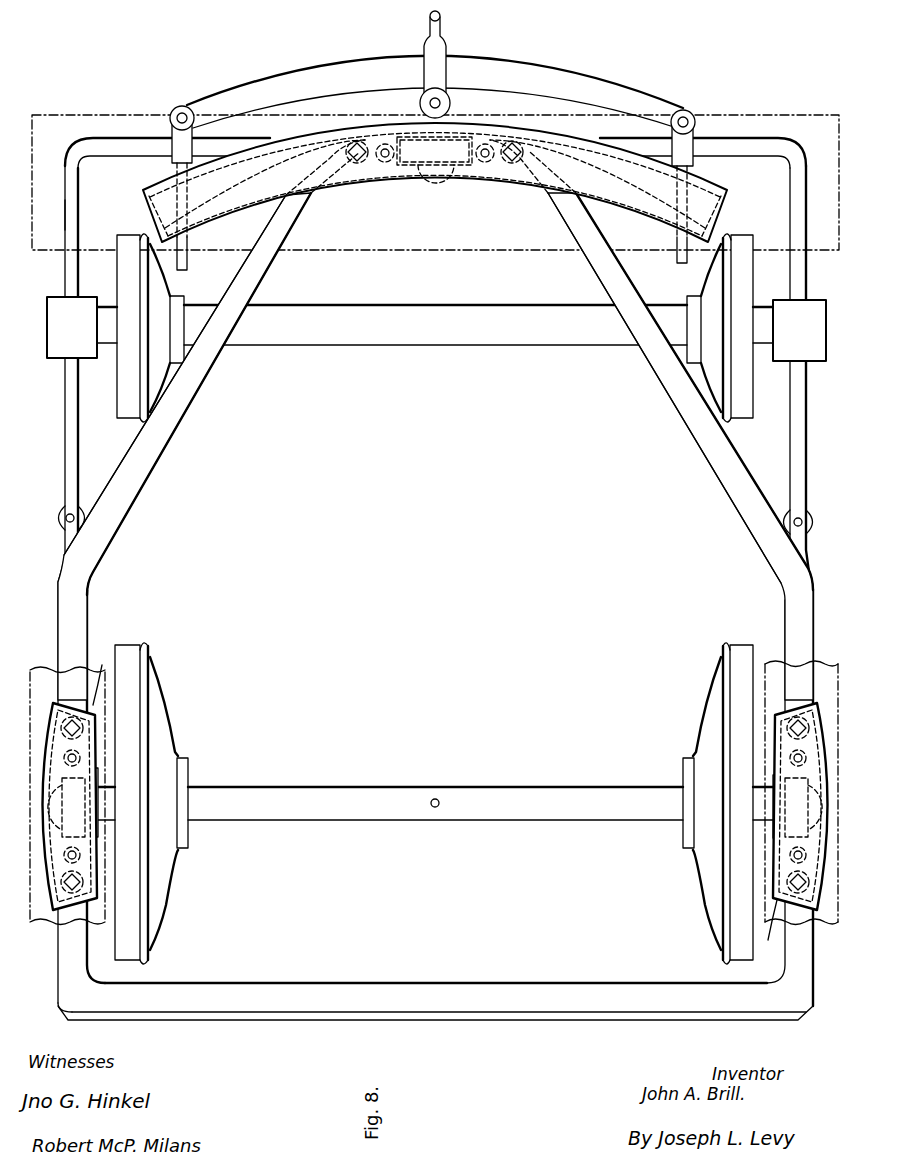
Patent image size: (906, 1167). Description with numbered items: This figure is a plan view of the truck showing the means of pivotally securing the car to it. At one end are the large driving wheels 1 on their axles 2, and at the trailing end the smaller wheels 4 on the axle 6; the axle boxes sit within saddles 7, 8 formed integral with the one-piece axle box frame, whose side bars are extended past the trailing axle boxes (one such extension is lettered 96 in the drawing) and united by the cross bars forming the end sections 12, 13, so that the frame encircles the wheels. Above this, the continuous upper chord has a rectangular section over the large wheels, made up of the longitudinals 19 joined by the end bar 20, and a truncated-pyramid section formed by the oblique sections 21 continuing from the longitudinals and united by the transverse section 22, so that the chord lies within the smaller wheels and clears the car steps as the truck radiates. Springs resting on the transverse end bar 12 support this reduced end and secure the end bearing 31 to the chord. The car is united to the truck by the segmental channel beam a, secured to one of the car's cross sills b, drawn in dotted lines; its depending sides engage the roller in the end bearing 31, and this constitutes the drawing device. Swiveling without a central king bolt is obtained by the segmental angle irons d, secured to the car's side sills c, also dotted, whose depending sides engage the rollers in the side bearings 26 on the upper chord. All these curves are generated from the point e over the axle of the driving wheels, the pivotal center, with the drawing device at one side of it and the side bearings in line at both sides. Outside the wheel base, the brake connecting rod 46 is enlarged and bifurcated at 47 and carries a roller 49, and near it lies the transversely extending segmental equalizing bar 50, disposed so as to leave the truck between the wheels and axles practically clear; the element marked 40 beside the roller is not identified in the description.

The driving wheels 1 is at (432, 803).
The axles 2 is at (435, 786).
The trailing wheels 4 is at (434, 328).
The axle 6 is at (435, 325).
The saddle 7 is at (772, 773).
The saddle 8 is at (436, 329).
The transverse end bar 12 is at (163, 143).
The end section 13 is at (478, 1018).
The longitudinals 19 is at (820, 958).
The end bar 20 is at (505, 1000).
The oblique sections 21 is at (668, 386).
The transverse section 22 is at (538, 170).
The side bearing 26 is at (60, 862).
The end bearing 31 is at (484, 164).
The bolster inner edge 40 is at (452, 100).
The connecting rod 46 is at (443, 22).
The bifurcated enlargement 47 is at (434, 61).
The roller 49 is at (421, 104).
The segmental equalizing bar 50 is at (435, 80).
The frame corner 96 is at (76, 190).
The segmental channel beam a is at (435, 182).
The cross sill b is at (128, 115).
The side sills c is at (429, 773).
The segmental angle irons d is at (433, 803).
The pivotal center e is at (438, 806).